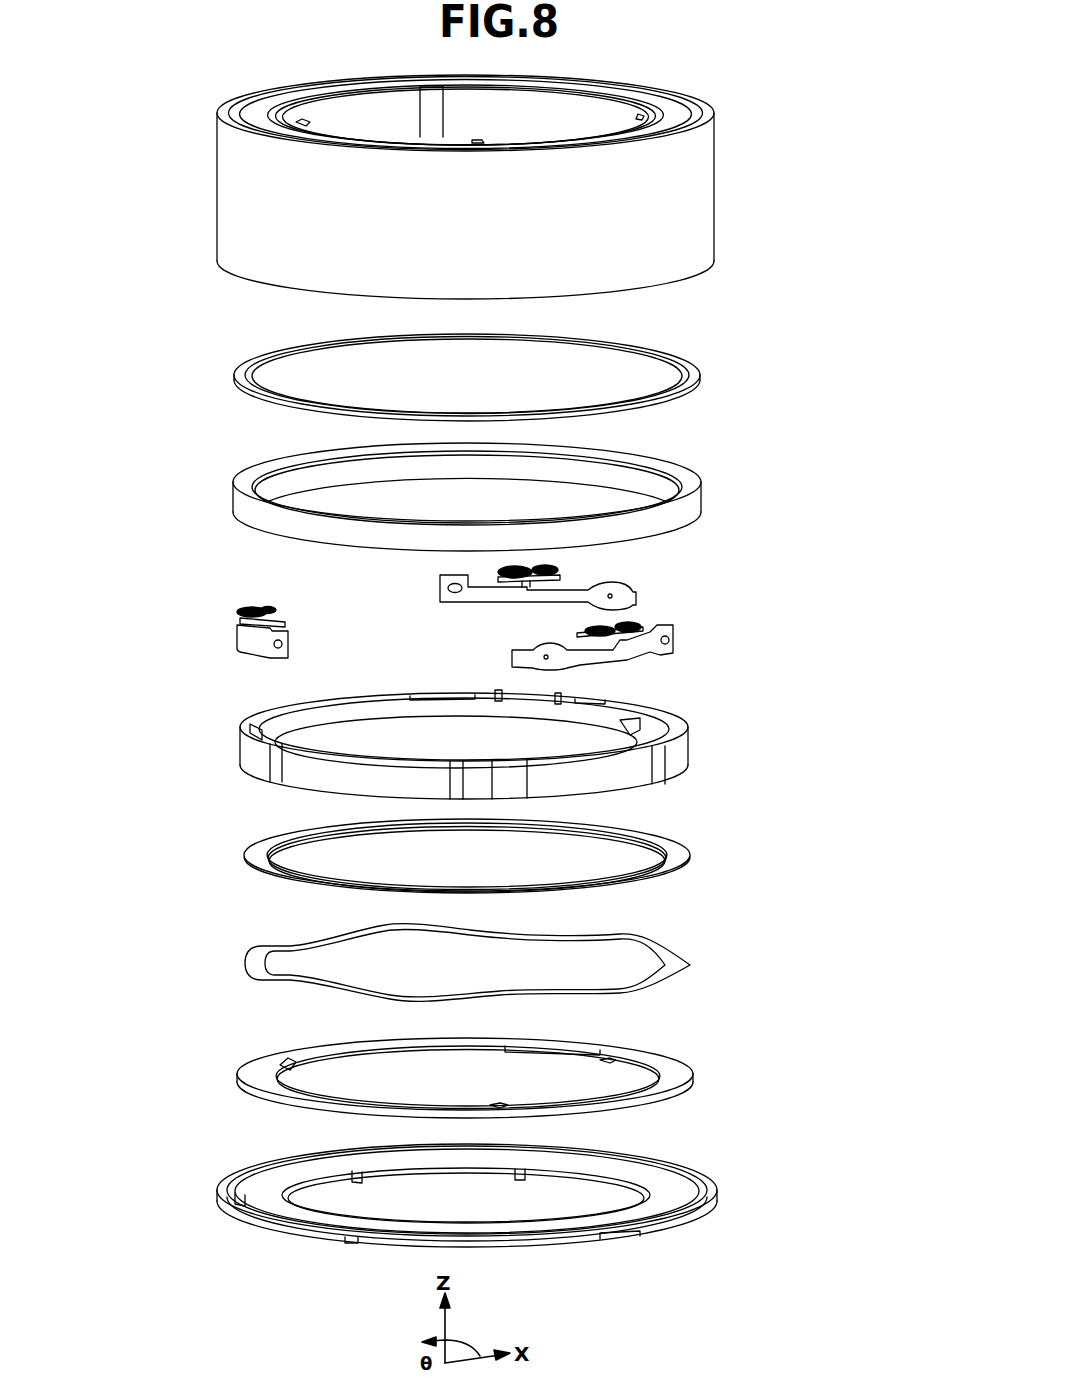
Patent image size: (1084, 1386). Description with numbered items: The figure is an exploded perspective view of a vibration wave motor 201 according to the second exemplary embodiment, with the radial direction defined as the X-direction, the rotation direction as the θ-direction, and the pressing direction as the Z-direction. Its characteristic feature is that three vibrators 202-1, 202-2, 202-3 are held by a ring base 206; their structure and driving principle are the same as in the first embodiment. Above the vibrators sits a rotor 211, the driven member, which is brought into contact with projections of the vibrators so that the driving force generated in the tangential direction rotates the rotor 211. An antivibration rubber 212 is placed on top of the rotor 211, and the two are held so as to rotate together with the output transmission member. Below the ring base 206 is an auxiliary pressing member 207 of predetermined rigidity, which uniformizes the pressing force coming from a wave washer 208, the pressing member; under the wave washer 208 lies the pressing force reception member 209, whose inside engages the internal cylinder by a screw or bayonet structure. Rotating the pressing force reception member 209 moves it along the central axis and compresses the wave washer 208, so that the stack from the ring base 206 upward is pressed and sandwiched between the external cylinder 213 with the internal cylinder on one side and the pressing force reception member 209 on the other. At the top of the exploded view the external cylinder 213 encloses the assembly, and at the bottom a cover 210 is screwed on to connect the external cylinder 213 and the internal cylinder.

The vibration wave motor 201 is at (790, 81).
The external cylinder 213 is at (696, 200).
The antivibration rubber 212 is at (700, 381).
The rotor 211 is at (692, 503).
The vibrator 202-1 is at (630, 624).
The vibrator 202-2 is at (558, 576).
The vibrator 202-3 is at (237, 607).
The ring base 206 is at (682, 757).
The auxiliary pressing member 207 is at (680, 855).
The wave washer 208 is at (687, 967).
The pressing force reception member 209 is at (682, 1073).
The cover 210 is at (693, 1215).